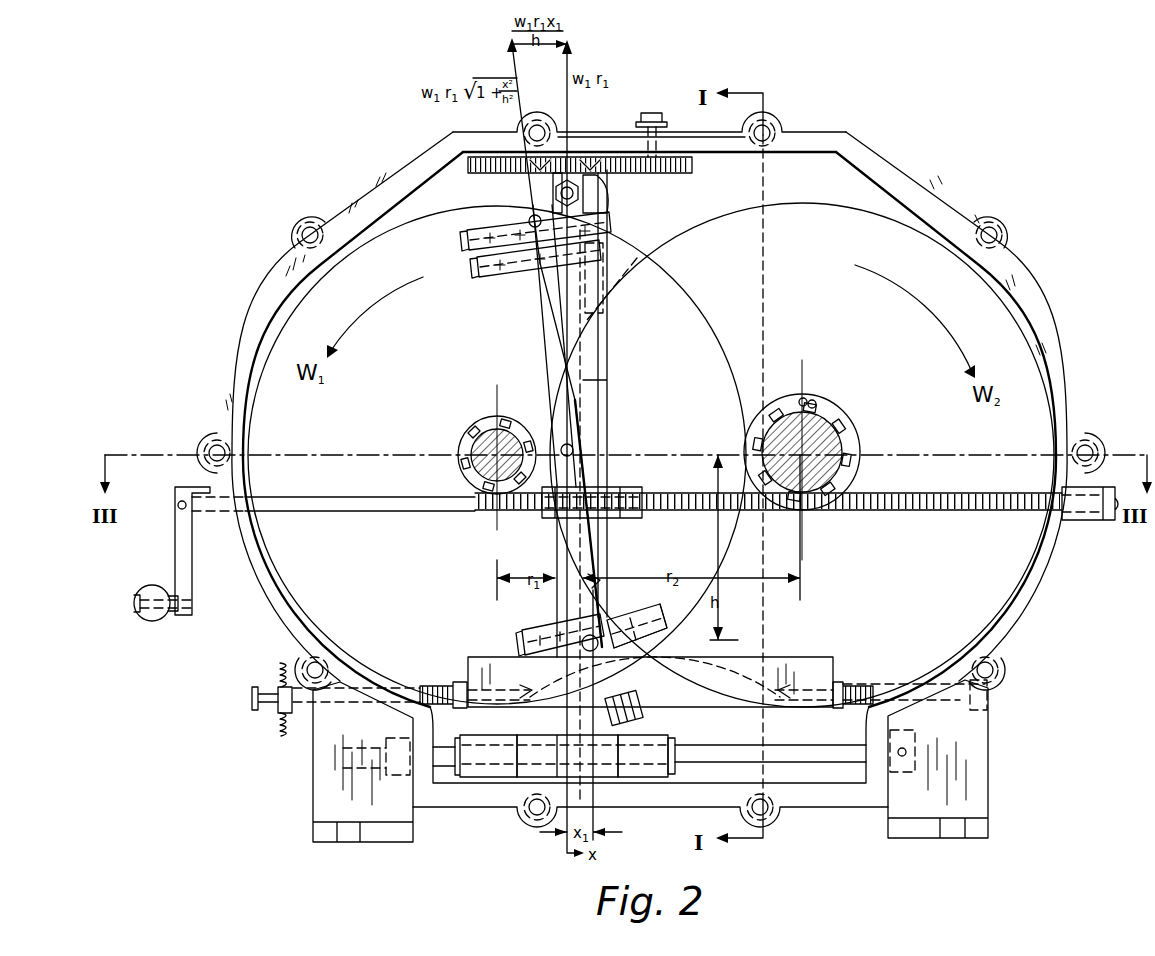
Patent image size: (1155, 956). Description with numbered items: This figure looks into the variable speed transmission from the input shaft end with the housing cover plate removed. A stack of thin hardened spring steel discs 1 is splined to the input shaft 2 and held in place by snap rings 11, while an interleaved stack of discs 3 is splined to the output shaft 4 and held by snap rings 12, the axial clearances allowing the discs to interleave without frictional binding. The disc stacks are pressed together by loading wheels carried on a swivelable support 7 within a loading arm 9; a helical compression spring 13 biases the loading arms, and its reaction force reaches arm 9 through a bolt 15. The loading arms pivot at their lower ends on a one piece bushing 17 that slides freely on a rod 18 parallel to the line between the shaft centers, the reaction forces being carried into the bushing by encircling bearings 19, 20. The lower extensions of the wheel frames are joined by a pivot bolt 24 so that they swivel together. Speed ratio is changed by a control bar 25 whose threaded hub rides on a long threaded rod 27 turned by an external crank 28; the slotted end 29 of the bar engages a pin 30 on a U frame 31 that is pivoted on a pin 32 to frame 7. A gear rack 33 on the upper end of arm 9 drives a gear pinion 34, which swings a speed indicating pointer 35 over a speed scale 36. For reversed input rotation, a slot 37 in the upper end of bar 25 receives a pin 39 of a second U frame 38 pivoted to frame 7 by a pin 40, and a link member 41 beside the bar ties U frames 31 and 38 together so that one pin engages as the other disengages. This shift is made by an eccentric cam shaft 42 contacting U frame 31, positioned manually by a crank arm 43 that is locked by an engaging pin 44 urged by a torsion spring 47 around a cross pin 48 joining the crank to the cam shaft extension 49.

The stack of spring steel discs 1 is at (264, 271).
The input shaft 2 is at (475, 446).
The stack of discs 3 is at (723, 215).
The output shaft 4 is at (840, 430).
The swivelable support 7 is at (604, 598).
The loading arm 9 is at (556, 598).
The snap rings 11 is at (484, 418).
The snap rings 12 is at (826, 405).
The helical compression spring 13 is at (612, 195).
The bolt 15 is at (553, 193).
The bushing 17 is at (684, 738).
The rod 18 is at (706, 746).
The encircling bearing 19 is at (474, 738).
The encircling bearing 20 is at (530, 729).
The pivot bolt 24 is at (642, 712).
The bar 25 is at (611, 366).
The threaded rod 27 is at (950, 492).
The crank 28 is at (152, 590).
The slotted end 29 is at (603, 577).
The pin 30 is at (650, 612).
The U frame 31 is at (522, 632).
The pin 32 is at (670, 638).
The gear rack 33 is at (637, 172).
The gear pinion 34 is at (694, 165).
The speed indicating pointer 35 is at (641, 122).
The speed scale 36 is at (735, 137).
The slot 37 is at (607, 288).
The U frame 38 is at (489, 278).
The pin 39 is at (529, 221).
The pin 40 is at (471, 266).
The link member 41 is at (536, 349).
The eccentric cam shaft 42 is at (800, 657).
The crank arm 43 is at (262, 686).
The engaging pin 44 is at (276, 712).
The torsion spring 47 is at (280, 674).
The cross pin 48 is at (283, 660).
The cam shaft extension 49 is at (433, 688).